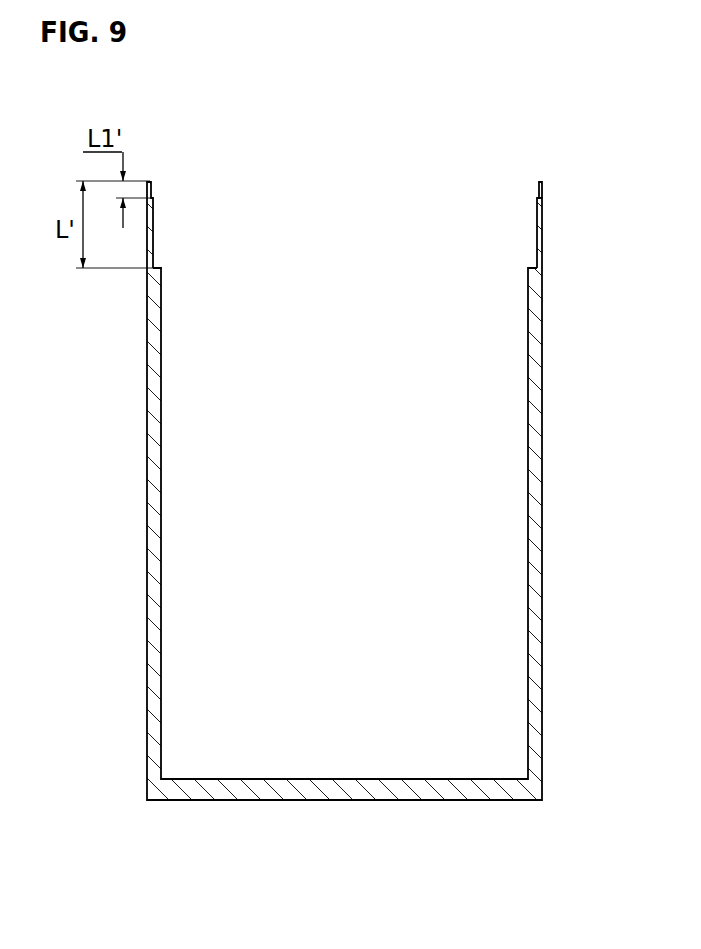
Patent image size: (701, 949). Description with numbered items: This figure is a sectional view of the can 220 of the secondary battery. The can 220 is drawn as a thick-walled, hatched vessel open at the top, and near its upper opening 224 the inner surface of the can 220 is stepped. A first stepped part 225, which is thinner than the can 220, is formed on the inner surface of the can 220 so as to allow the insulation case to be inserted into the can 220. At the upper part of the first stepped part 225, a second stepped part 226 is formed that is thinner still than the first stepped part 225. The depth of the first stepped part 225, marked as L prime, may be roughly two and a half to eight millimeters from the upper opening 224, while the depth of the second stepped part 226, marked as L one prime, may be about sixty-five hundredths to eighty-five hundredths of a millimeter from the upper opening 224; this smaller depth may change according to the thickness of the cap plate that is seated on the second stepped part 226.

The can 220 is at (541, 495).
The upper opening 224 is at (149, 180).
The first stepped part 225 is at (537, 243).
The second stepped part 226 is at (543, 183).